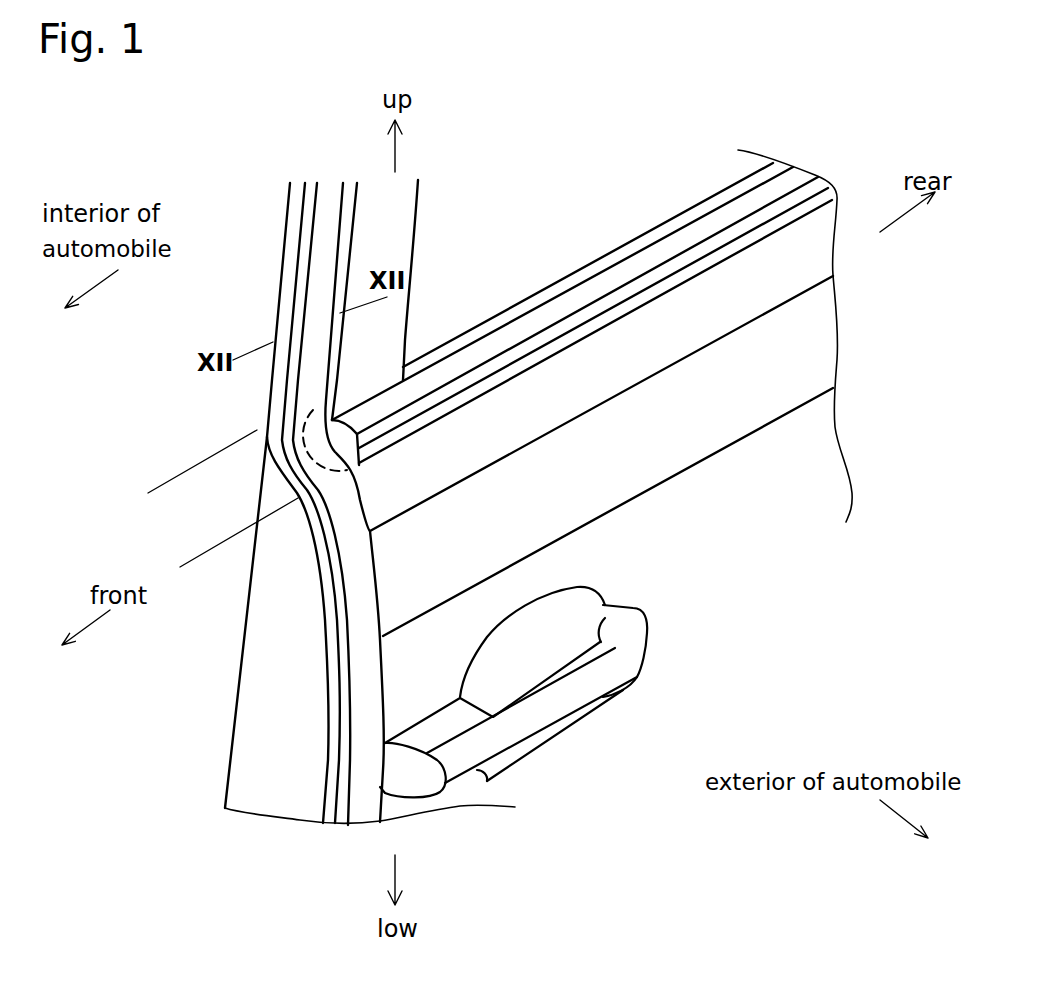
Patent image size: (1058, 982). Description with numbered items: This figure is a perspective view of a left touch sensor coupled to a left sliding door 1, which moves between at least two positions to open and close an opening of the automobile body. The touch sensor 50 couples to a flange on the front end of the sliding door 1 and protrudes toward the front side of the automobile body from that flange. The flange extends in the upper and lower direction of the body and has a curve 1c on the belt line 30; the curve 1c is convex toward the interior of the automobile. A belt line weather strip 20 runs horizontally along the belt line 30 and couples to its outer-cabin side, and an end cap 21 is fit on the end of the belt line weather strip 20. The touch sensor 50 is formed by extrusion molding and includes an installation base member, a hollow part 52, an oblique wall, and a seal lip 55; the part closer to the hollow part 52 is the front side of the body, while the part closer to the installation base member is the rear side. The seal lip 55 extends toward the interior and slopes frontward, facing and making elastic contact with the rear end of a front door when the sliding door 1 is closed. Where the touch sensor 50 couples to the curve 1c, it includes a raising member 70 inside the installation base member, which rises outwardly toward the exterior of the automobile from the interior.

The sliding door 1 is at (622, 742).
The curve 1c is at (155, 490).
The belt line weather strip 20 is at (662, 252).
The end cap 21 is at (353, 428).
The belt line 30 is at (733, 247).
The touch sensor 50 is at (303, 716).
The hollow part 52 is at (268, 432).
The seal lip 55 is at (320, 248).
The raising member 70 is at (313, 457).